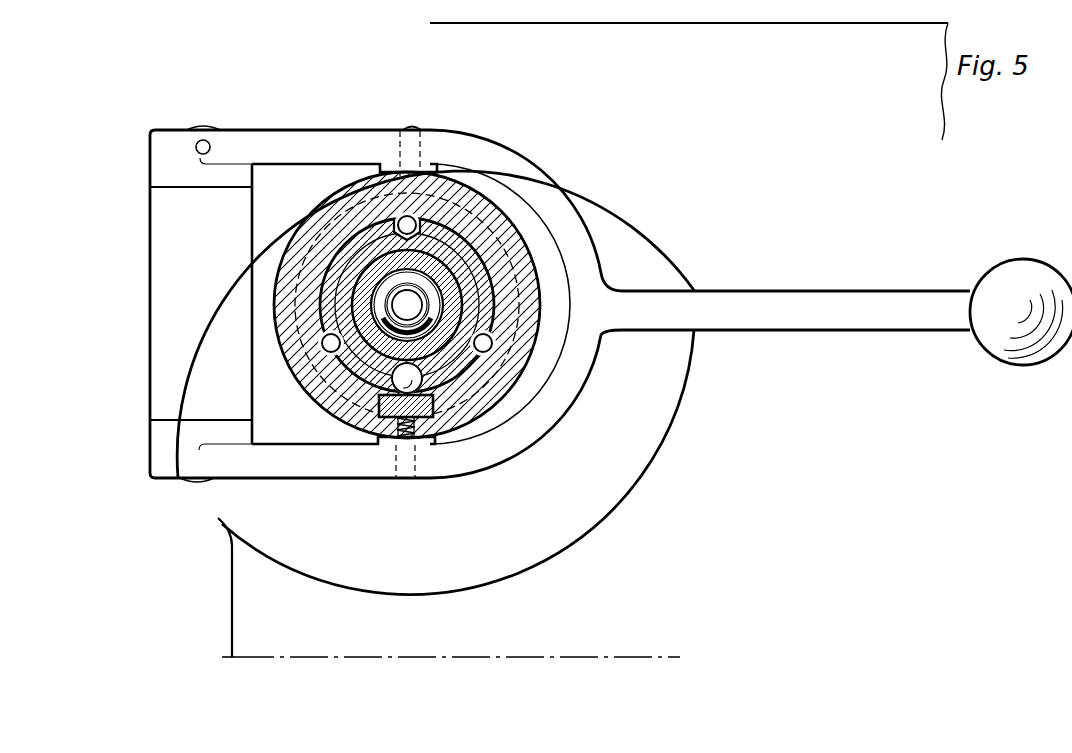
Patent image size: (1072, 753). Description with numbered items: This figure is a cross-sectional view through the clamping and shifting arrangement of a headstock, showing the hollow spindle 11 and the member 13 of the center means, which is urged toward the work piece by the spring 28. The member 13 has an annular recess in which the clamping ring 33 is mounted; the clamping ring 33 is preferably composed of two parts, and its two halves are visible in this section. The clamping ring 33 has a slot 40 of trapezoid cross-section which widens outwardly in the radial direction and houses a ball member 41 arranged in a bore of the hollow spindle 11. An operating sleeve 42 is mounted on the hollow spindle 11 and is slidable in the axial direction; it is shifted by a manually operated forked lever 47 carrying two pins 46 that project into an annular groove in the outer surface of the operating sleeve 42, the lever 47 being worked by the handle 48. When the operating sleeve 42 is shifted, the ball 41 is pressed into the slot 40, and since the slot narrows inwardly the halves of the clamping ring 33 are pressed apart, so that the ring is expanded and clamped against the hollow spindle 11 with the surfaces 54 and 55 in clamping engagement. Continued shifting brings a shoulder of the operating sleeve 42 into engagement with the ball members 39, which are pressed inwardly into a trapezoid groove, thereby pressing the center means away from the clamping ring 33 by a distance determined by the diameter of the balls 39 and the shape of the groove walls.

The hollow spindle 11 is at (495, 212).
The member of the center means 13 is at (456, 246).
The spring 28 is at (380, 406).
The clamping ring 33 is at (378, 254).
The ball members 39 is at (403, 222).
The slot 40 is at (402, 386).
The ball member 41 is at (403, 420).
The operating sleeve 42 is at (486, 404).
The pins 46 is at (412, 128).
The forked lever 47 is at (298, 148).
The handle 48 is at (998, 332).
The clamping surface 54 is at (460, 366).
The clamping surface 55 is at (505, 276).